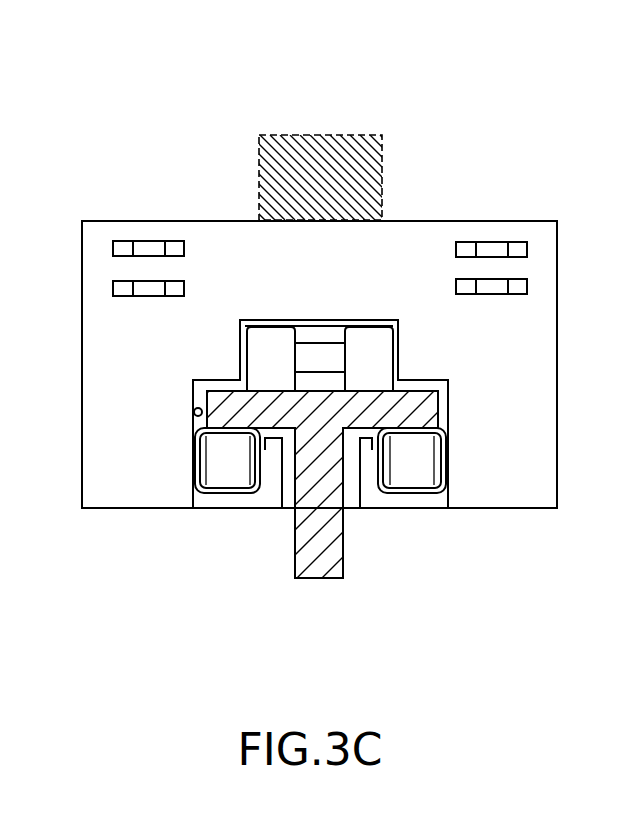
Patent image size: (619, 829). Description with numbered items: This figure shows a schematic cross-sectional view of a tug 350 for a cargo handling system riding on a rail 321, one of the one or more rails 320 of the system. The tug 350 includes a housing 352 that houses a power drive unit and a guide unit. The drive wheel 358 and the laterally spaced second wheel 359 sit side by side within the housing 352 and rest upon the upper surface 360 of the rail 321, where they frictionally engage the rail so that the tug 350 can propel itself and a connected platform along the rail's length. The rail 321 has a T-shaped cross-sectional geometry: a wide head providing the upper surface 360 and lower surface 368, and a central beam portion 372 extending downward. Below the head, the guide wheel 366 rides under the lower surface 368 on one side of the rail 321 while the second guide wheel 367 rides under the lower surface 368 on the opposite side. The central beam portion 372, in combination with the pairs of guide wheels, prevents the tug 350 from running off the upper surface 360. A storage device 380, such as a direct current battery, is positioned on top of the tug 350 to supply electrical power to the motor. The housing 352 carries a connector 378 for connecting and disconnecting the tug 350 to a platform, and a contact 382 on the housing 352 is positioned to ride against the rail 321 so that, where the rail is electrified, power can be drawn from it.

The tug 350 is at (212, 84).
The housing 352 is at (520, 229).
The drive wheel 358 is at (380, 355).
The second wheel 359 is at (271, 342).
The upper surface 360 is at (338, 391).
The guide wheel 366 is at (422, 480).
The second guide wheel 367 is at (224, 478).
The lower surface 368 is at (420, 430).
The central beam portion 372 is at (295, 520).
The one or more rails 320 is at (343, 535).
The rail 321 is at (328, 571).
The connector 378 is at (146, 230).
The storage device 380 is at (357, 141).
The contact 382 is at (194, 412).